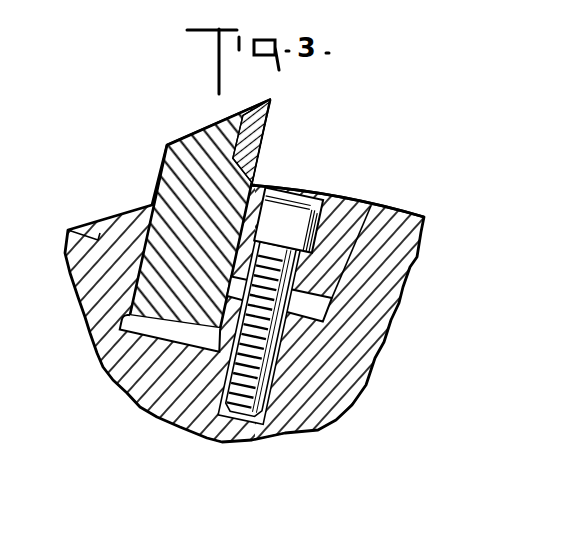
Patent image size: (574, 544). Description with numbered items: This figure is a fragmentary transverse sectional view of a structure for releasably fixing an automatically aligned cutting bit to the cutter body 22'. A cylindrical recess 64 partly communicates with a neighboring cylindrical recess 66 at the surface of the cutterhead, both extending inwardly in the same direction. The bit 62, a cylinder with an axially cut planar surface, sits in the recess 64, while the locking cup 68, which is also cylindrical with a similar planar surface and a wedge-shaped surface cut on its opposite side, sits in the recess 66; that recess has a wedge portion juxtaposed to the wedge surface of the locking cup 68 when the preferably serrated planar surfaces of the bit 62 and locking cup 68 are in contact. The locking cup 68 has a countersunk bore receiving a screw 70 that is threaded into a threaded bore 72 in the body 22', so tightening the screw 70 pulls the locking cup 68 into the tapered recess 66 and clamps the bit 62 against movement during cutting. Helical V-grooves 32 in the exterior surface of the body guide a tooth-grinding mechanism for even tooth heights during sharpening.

The cutter body 22' is at (244, 271).
The helical V-grooves 32 is at (98, 240).
The bit 62 is at (167, 142).
The cylindrical recess 64 is at (135, 333).
The cylindrical recess 66 is at (321, 194).
The locking cup 68 is at (318, 277).
The screw 70 is at (262, 346).
The threaded bore 72 is at (282, 404).